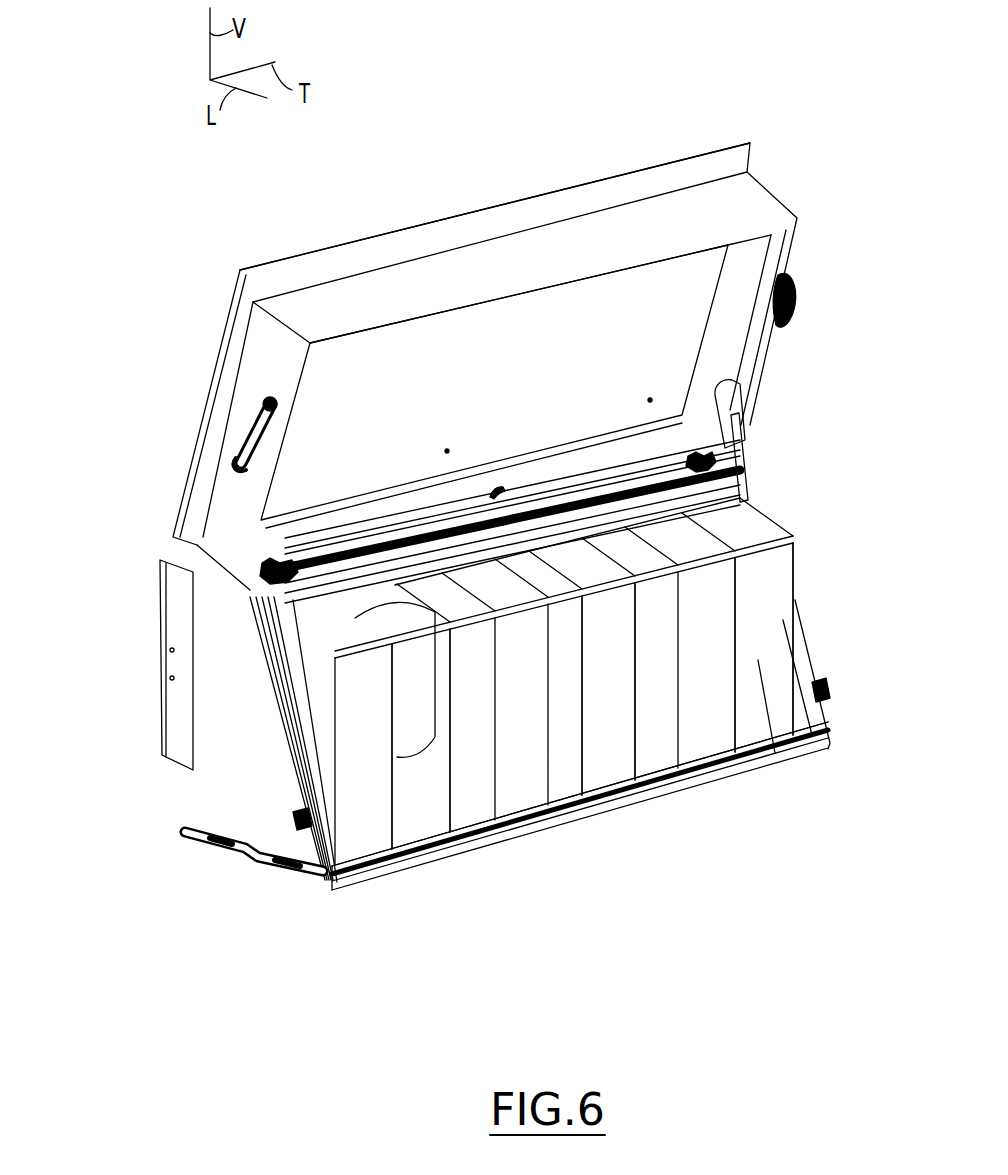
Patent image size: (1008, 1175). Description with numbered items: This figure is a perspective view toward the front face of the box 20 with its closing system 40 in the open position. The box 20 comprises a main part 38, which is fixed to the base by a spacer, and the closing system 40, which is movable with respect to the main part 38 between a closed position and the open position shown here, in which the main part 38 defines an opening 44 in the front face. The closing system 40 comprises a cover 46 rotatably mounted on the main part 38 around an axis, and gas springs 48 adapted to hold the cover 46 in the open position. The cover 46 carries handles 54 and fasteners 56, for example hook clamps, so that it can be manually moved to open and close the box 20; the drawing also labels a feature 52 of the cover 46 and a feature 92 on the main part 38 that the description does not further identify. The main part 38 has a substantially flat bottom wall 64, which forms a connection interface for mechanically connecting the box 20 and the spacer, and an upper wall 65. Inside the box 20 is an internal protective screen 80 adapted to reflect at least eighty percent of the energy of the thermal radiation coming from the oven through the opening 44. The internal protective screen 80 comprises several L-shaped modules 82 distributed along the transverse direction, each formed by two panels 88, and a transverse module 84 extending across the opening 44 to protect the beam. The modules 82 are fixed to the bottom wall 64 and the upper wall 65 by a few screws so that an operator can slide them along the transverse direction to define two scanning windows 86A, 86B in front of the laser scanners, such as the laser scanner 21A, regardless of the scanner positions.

The box 20 is at (140, 480).
The 3D laser scanner 21A is at (413, 689).
The main part 38 is at (232, 768).
The closing system 40 is at (710, 218).
The opening 44 is at (484, 689).
The cover 46 is at (572, 252).
The gas spring 48 is at (742, 458).
The top wall of lid 52 is at (462, 205).
The handle 54 is at (242, 434).
The fastener 56 is at (296, 818).
The bottom wall 64 is at (629, 923).
The upper wall 65 is at (195, 553).
The internal protective screen 80 is at (557, 667).
The module 82 is at (650, 655).
The transverse module 84 is at (410, 735).
The scanning window 86A is at (368, 862).
The scanning window 86B is at (708, 635).
The panel 88 is at (777, 570).
The carrying handle 92 is at (258, 870).